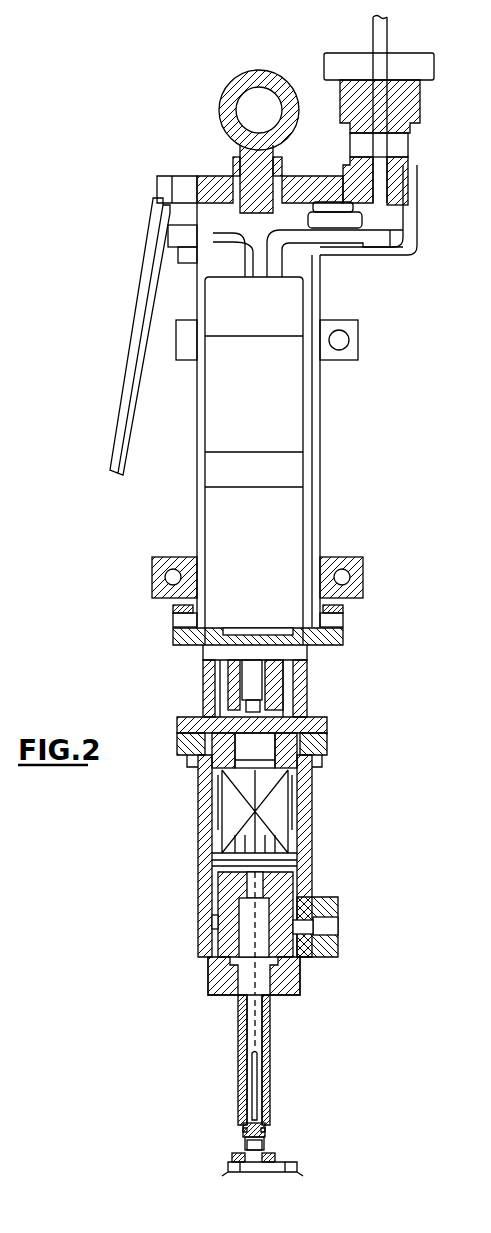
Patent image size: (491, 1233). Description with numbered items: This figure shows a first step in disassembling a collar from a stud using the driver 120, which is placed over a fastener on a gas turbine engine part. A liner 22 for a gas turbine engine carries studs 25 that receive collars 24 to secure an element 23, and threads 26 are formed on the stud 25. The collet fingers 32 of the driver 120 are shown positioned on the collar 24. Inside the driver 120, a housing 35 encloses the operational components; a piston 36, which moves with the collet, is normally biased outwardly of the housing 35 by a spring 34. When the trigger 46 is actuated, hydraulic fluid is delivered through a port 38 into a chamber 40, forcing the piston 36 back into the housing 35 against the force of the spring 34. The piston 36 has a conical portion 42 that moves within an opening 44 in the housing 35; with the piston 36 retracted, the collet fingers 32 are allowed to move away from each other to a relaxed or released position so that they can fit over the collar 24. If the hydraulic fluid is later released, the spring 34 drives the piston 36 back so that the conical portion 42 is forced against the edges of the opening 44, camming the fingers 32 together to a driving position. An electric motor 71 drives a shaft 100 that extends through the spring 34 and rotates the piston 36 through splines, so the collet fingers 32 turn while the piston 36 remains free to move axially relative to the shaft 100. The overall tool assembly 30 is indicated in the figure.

The liner 22 is at (296, 1166).
The element 23 is at (234, 1155).
The collar 24 is at (270, 1160).
The stud 25 is at (260, 1144).
The threads 26 is at (245, 1125).
The dispensing valve assembly 30 is at (87, 995).
The collet fingers 32 is at (243, 1130).
The spring 34 is at (235, 793).
The housing 35 is at (203, 833).
The piston 36 is at (282, 922).
The port 38 is at (328, 927).
The chamber 40 is at (212, 923).
The conical portion 42 is at (242, 983).
The opening 44 is at (275, 997).
The trigger 46 is at (127, 383).
The electric motor 71 is at (233, 427).
The shaft 100 is at (260, 787).
The driver 120 is at (127, 1115).